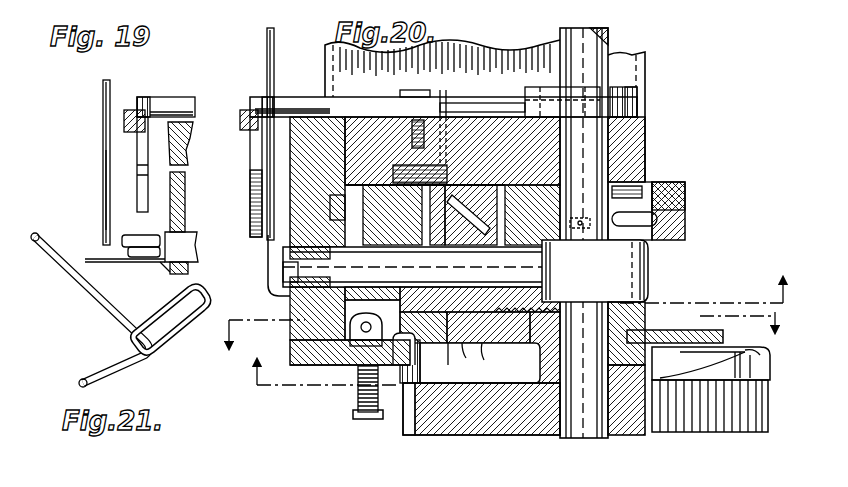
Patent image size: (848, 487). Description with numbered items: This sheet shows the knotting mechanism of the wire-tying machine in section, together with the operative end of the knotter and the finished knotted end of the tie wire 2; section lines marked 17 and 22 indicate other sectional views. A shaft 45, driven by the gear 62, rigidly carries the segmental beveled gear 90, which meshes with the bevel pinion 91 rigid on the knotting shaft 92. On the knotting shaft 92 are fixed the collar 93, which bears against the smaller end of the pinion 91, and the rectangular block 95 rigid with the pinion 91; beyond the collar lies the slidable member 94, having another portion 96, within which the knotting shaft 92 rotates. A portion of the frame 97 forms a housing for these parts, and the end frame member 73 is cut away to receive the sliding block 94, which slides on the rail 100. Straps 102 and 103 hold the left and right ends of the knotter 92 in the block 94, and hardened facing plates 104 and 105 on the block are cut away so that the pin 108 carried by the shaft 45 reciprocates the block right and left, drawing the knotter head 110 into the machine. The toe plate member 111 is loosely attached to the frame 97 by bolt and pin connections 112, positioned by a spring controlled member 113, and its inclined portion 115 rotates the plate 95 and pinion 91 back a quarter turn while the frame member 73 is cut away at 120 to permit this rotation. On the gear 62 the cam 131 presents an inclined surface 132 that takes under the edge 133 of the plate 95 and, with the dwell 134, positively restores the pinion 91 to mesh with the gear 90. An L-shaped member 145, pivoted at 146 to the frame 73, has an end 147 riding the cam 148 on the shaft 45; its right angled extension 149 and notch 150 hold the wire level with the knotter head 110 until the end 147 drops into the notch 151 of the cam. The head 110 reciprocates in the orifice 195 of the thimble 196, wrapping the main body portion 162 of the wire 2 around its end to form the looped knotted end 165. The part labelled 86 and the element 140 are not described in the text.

In FIG. 19, the wire 2 is at (104, 100).
In FIG. 21, the wire 2 is at (65, 271).
In FIG. 20, the wire 2 is at (275, 51).
In FIG. 20, the section line 17 is at (496, 341).
In FIG. 20, the section line 22 is at (507, 331).
In FIG. 20, the shaft 45 is at (610, 47).
In FIG. 20, the gear 62 is at (468, 432).
In FIG. 20, the end frame member 73 is at (528, 105).
In FIG. 19, the block 86 is at (128, 110).
In FIG. 20, the block 86 is at (242, 113).
In FIG. 20, the segmental beveled gear 90 is at (480, 363).
In FIG. 20, the bevel pinion 91 is at (474, 348).
In FIG. 20, the knotting shaft 92 is at (487, 343).
In FIG. 20, the collar 93 is at (512, 250).
In FIG. 20, the slidable member 94 is at (547, 197).
In FIG. 20, the rectangular block 95 is at (460, 352).
In FIG. 20, the portion of the slidable member 96 is at (374, 236).
In FIG. 19, the frame portion 97 is at (192, 132).
In FIG. 20, the frame portion 97 is at (298, 228).
In FIG. 20, the rail 100 is at (330, 205).
In FIG. 20, the strap 102 is at (368, 295).
In FIG. 20, the strap 103 is at (540, 300).
In FIG. 20, the facing plate 104 is at (686, 219).
In FIG. 20, the facing plate 105 is at (558, 236).
In FIG. 20, the pin 108 is at (640, 214).
In FIG. 19, the knotter head 110 is at (130, 238).
In FIG. 20, the knotter head 110 is at (285, 266).
In FIG. 20, the toe plate member 111 is at (338, 366).
In FIG. 20, the bolt and pin connections 112 is at (290, 350).
In FIG. 20, the spring controlled member 113 is at (354, 414).
In FIG. 20, the inclined portion 115 is at (400, 352).
In FIG. 20, the cut-away 120 is at (440, 160).
In FIG. 20, the cam 131 is at (752, 372).
In FIG. 20, the inclined surface 132 is at (748, 358).
In FIG. 20, the edge 133 is at (450, 436).
In FIG. 20, the dwell 134 is at (680, 350).
In FIG. 20, the screw 140 is at (375, 386).
In FIG. 19, the L-shaped member 145 is at (168, 102).
In FIG. 20, the L-shaped member 145 is at (345, 105).
In FIG. 20, the pivot 146 is at (405, 90).
In FIG. 20, the end 147 is at (550, 73).
In FIG. 20, the cam 148 is at (640, 100).
In FIG. 19, the right angled extension 149 is at (140, 162).
In FIG. 20, the right angled extension 149 is at (251, 160).
In FIG. 19, the notch 150 is at (150, 97).
In FIG. 20, the notch 150 is at (276, 105).
In FIG. 20, the notch 151 is at (640, 90).
In FIG. 19, the main body portion 162 is at (108, 193).
In FIG. 21, the looped knotted end 165 is at (170, 358).
In FIG. 19, the orifice 195 is at (197, 233).
In FIG. 20, the orifice 195 is at (272, 292).
In FIG. 19, the thimble 196 is at (166, 273).
In FIG. 20, the thimble 196 is at (292, 256).